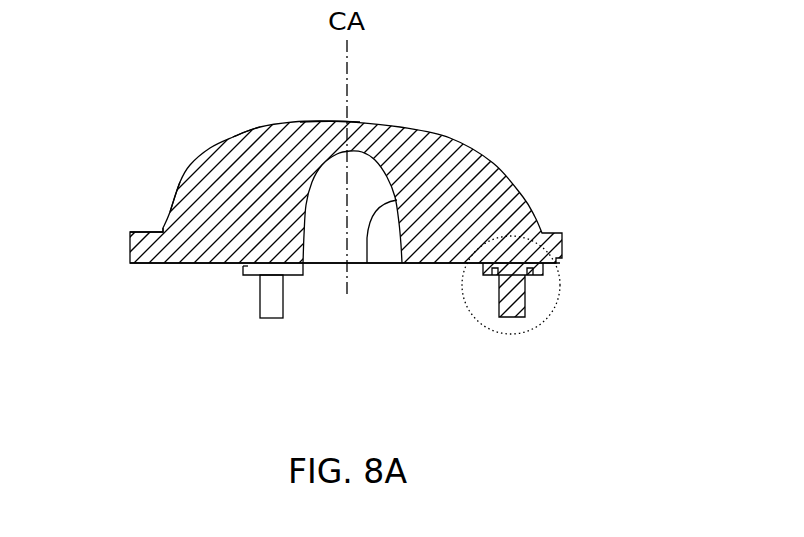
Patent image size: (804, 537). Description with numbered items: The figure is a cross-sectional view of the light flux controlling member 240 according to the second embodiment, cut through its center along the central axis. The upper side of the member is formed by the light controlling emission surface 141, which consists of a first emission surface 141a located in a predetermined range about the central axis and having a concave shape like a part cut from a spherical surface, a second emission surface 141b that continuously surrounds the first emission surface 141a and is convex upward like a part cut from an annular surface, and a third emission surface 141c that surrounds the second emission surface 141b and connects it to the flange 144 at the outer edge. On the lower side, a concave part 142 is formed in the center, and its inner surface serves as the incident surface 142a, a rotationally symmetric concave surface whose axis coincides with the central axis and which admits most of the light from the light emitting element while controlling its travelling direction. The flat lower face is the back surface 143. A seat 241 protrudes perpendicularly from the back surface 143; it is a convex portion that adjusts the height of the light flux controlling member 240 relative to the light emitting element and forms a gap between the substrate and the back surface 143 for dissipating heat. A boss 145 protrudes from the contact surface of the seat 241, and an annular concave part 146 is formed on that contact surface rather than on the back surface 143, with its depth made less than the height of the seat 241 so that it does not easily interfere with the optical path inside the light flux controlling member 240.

The light controlling emission surface 141 is at (148, 39).
The first emission surface 141a is at (337, 123).
The second emission surface 141b is at (245, 137).
The third emission surface 141c is at (168, 214).
The flange 144 is at (130, 231).
The back surface 143 is at (168, 264).
The concave part 142 is at (327, 263).
The incident surface 142a is at (368, 263).
The boss 145 is at (268, 312).
The annular concave part 146 is at (497, 275).
The seat 241 is at (243, 272).
The light flux controlling member 240 is at (505, 120).